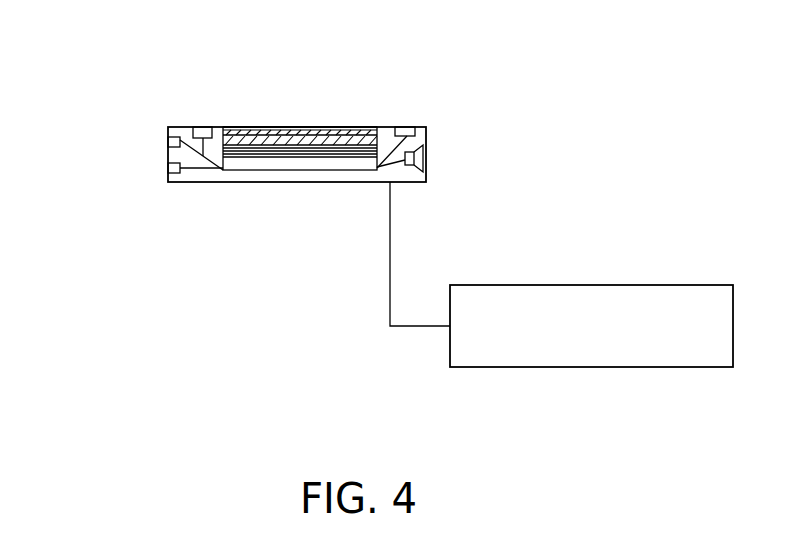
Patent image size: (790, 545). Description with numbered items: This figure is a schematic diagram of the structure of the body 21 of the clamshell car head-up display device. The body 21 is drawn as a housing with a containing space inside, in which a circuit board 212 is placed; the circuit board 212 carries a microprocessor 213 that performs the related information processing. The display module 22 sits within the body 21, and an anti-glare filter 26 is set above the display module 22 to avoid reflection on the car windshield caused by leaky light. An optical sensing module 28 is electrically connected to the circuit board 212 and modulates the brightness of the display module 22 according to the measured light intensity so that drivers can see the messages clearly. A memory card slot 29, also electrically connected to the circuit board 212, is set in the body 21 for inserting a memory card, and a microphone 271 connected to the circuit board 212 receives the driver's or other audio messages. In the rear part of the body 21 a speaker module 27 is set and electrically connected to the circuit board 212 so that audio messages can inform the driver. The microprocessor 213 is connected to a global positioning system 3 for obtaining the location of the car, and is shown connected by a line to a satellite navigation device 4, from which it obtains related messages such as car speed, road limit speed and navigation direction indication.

The global positioning system 3 is at (405, 127).
The satellite navigation device 4 is at (592, 285).
The body 21 is at (198, 182).
The display module 22 is at (341, 152).
The anti-glare filter 26 is at (283, 127).
The speaker module 27 is at (426, 155).
The optical sensing module 28 is at (202, 127).
The memory card slot 29 is at (168, 143).
The circuit board 212 is at (320, 170).
The microprocessor 213 is at (266, 160).
The microphone 271 is at (168, 171).